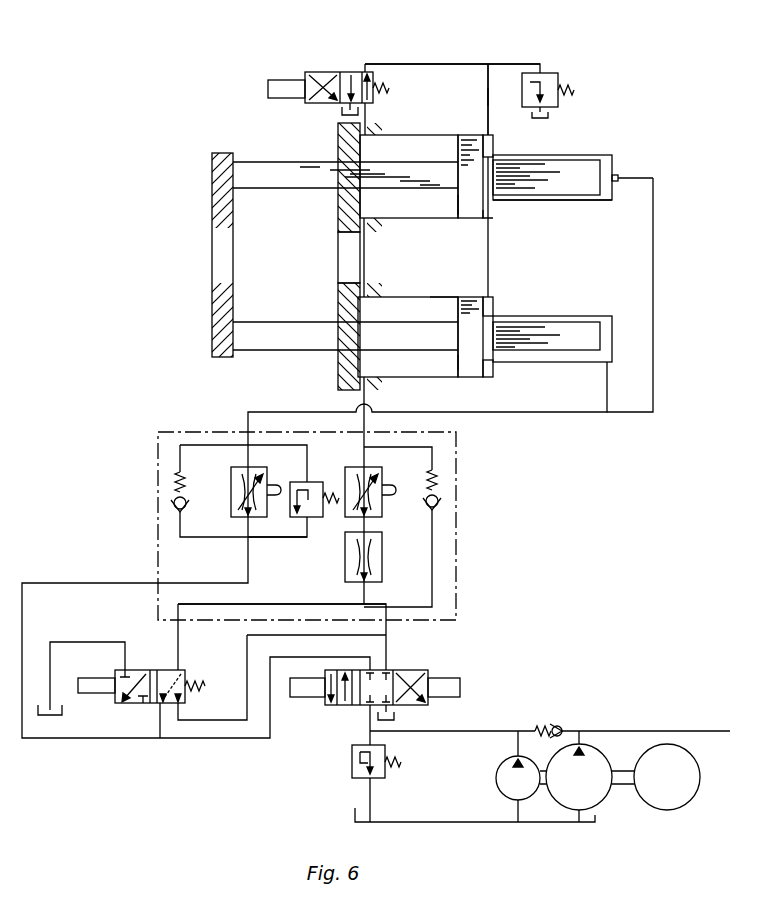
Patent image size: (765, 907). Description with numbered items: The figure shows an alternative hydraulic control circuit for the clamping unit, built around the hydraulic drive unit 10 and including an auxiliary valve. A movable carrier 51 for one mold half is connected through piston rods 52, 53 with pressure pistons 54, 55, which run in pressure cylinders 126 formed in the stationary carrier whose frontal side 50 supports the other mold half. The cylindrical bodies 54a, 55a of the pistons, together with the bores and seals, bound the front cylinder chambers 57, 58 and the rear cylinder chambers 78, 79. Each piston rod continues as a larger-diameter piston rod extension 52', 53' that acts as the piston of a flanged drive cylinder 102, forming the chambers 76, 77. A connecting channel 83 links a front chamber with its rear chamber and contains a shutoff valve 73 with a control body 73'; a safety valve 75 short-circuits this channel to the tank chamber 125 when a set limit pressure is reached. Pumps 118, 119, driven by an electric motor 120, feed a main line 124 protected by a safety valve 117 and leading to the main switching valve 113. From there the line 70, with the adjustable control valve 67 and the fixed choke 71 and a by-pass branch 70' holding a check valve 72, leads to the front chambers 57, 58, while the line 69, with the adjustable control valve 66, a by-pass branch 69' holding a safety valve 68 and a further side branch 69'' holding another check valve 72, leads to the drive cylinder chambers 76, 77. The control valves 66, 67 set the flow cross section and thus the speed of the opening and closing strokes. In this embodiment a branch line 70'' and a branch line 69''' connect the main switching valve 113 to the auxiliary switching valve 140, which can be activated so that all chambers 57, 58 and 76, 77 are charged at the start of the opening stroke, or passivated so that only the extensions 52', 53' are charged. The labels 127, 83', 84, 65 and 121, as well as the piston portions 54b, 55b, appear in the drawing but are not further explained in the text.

The hydraulic drive unit 10 is at (443, 78).
The connecting channel 83 is at (452, 39).
The housing wall 127 is at (492, 63).
The housing wall section 83' is at (505, 105).
The safety valve 75 is at (545, 80).
The shutoff valve 73 is at (347, 68).
The control body 73' is at (255, 90).
The frontal side 50 is at (337, 216).
The front cylinder chamber 57 is at (430, 155).
The front cylinder chamber 58 is at (415, 366).
The movable carrier 51 is at (222, 172).
The piston rod 52 is at (335, 156).
The piston rod 53 is at (307, 339).
The pressure piston 54 is at (472, 155).
The cylindrical body 54a is at (458, 205).
The piston face 54b is at (489, 217).
The rear cylinder chamber 78 is at (493, 145).
The piston rod extension 52' is at (552, 164).
The drive cylinder 102 is at (557, 200).
The chamber 76 is at (614, 173).
The partition wall 84 is at (489, 275).
The rear cylinder chamber 79 is at (494, 308).
The chamber 77 is at (604, 333).
The piston rod extension 53' is at (546, 318).
The pressure piston 55 is at (470, 366).
The cylindrical body 55a is at (458, 360).
The piston face 55b is at (489, 373).
The pressure cylinder 126 is at (441, 296).
The line 69 is at (362, 474).
The line 70 is at (302, 469).
The flow control unit 65 is at (178, 553).
The side branch 69'' is at (243, 509).
The by-pass branch 69' is at (277, 555).
The check valve 72 is at (173, 507).
The adjustable control valve 66 is at (257, 473).
The adjustable control valve 67 is at (385, 477).
The safety valve 68 is at (312, 517).
The fixed choke 71 is at (385, 564).
The by-pass branch 70' is at (429, 527).
The branch line 70'' is at (282, 592).
The auxiliary switching valve 140 is at (132, 705).
The branch line 69''' is at (180, 736).
The main switching valve 113 is at (372, 686).
The safety valve 117 is at (352, 763).
The main line 124 is at (445, 733).
The tank chamber 125 is at (443, 821).
The check valve 121 is at (554, 726).
The pump 118 is at (512, 792).
The pump 119 is at (565, 797).
The electric motor 120 is at (666, 800).